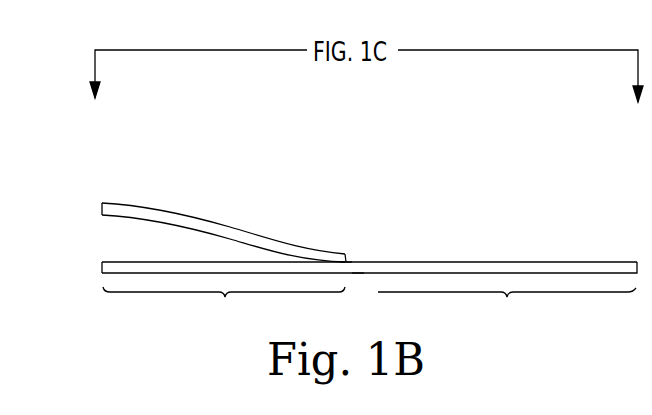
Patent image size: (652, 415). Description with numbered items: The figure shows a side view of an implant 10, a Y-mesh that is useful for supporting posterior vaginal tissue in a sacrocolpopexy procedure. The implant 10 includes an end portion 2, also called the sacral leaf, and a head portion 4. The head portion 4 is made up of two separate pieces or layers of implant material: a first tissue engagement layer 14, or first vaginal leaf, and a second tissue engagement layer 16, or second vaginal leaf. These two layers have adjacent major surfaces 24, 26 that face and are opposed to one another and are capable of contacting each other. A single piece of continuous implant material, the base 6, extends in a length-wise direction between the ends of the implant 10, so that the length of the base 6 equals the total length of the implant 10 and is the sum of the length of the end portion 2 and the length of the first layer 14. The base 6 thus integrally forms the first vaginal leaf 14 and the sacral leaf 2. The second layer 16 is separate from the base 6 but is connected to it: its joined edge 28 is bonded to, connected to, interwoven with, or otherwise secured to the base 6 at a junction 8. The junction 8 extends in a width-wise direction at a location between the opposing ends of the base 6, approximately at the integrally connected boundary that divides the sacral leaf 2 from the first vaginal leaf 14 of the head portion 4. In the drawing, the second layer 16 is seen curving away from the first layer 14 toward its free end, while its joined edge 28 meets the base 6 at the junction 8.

The implant 10 is at (176, 134).
The head portion 4 is at (262, 206).
The second tissue engagement layer 16 is at (128, 203).
The major surface 26 is at (104, 227).
The junction 8 is at (342, 253).
The joined edge 28 is at (361, 234).
The end portion 2 is at (351, 289).
The major surface 24 is at (131, 246).
The first tissue engagement layer 14 is at (102, 269).
The base 6 is at (358, 274).